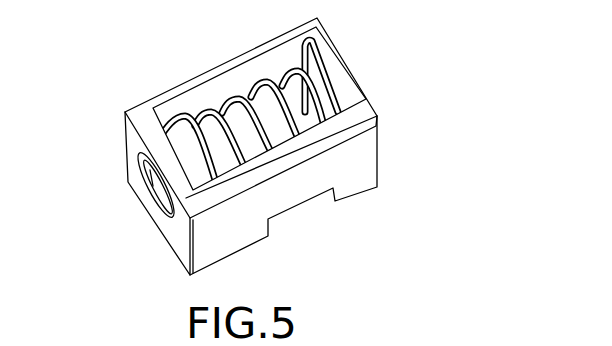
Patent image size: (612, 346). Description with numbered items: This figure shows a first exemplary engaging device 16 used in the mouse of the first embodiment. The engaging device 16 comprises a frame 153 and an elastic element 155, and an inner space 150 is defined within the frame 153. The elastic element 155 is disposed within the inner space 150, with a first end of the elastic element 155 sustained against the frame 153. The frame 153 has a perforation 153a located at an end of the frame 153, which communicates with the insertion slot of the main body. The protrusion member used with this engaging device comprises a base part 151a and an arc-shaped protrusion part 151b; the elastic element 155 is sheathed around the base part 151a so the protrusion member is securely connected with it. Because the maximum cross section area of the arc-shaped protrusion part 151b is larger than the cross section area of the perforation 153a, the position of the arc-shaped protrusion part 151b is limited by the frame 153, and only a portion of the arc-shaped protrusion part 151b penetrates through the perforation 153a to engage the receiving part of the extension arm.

The engaging device 16 is at (107, 34).
The inner space 150 is at (267, 105).
The base part 151a is at (310, 40).
The arc-shaped protrusion part 151b is at (143, 153).
The frame 153 is at (240, 147).
The perforation 153a is at (164, 219).
The elastic element 155 is at (180, 111).